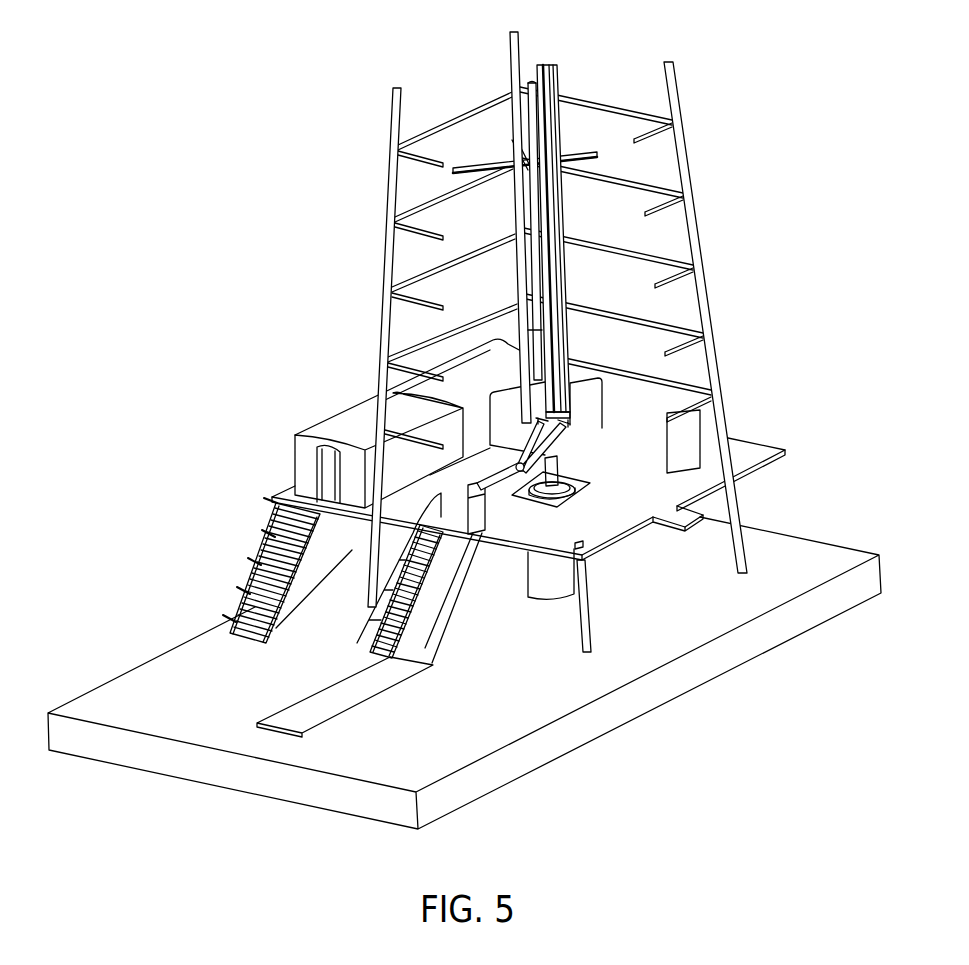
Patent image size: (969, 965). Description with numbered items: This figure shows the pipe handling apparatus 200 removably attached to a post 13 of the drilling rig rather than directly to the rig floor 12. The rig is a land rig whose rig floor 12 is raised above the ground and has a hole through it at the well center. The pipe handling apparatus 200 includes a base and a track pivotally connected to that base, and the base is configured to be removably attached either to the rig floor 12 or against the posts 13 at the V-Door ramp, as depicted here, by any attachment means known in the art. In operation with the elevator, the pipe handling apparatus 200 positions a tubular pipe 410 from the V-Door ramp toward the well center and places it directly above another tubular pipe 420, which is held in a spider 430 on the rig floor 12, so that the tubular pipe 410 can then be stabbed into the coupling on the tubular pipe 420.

The rig floor 12 is at (617, 527).
The post 13 is at (468, 540).
The pipe handling apparatus 200 is at (455, 488).
The tubular pipe 410 is at (545, 272).
The tubular pipe 420 is at (548, 468).
The spider 430 is at (560, 482).